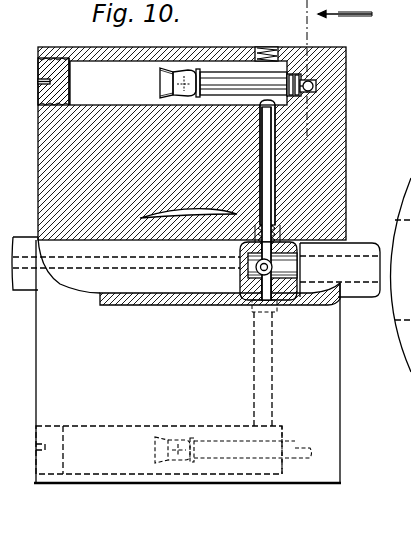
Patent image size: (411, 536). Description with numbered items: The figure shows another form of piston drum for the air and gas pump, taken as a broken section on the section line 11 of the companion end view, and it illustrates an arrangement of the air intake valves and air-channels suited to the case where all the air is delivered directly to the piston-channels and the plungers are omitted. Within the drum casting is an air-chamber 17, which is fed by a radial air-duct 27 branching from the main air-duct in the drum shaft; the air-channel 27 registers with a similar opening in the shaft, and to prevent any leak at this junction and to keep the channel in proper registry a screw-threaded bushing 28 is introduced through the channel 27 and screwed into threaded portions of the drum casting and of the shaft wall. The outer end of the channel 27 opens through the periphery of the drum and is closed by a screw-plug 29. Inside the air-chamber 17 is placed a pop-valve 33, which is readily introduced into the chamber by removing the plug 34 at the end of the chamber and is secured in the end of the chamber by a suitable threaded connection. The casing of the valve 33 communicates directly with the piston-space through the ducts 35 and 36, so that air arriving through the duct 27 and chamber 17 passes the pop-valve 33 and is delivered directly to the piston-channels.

The section line 11— 11 is at (211, 186).
The air-chamber 17 is at (80, 498).
The radial air-duct 27 is at (270, 135).
The screw-threaded bushing 28 is at (275, 232).
The screw-plug 29 is at (260, 45).
The pop-valve 33 is at (183, 70).
The plug 34 is at (58, 58).
The duct 35 is at (300, 82).
The duct 36 is at (316, 86).